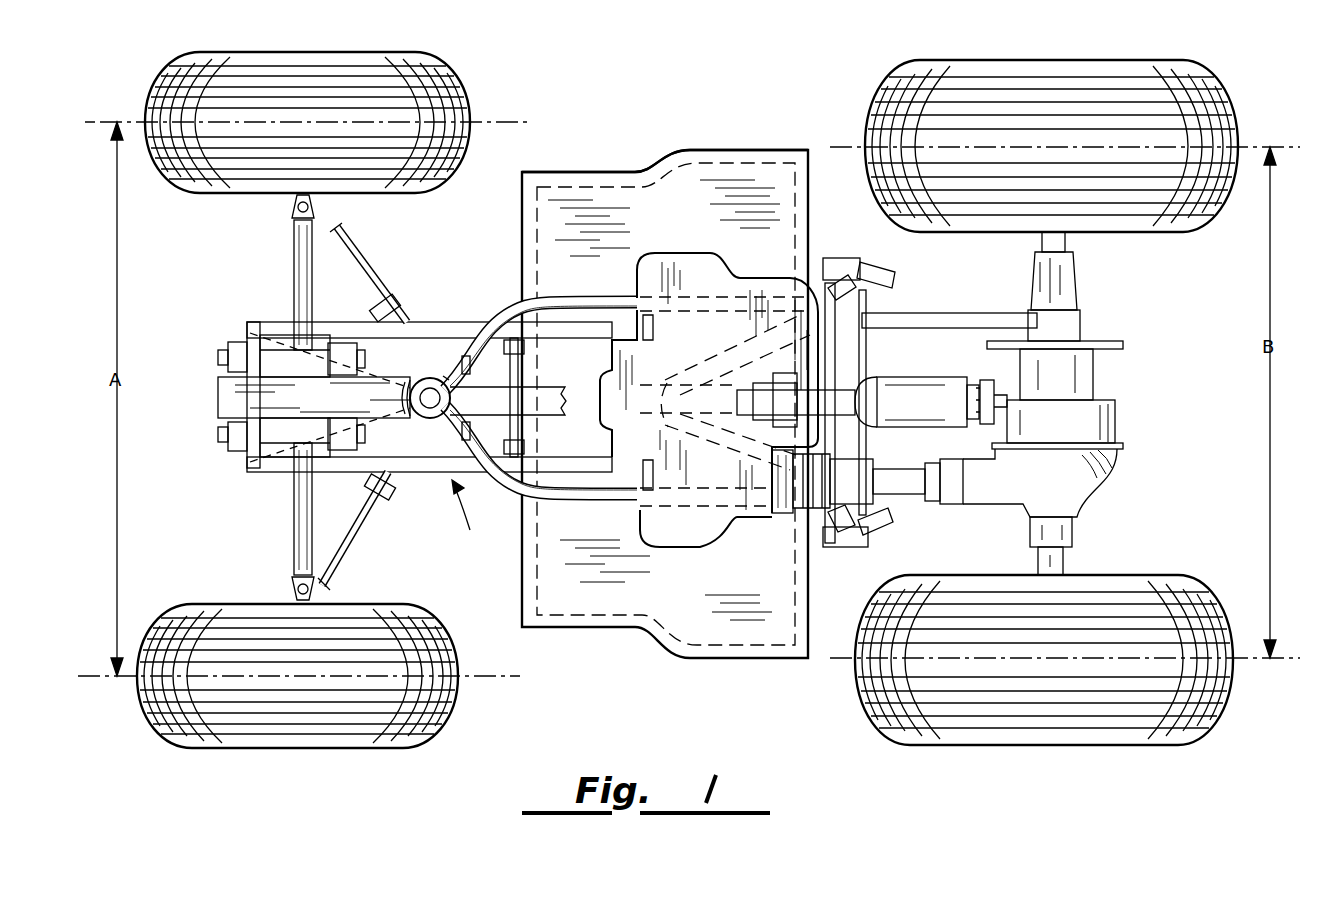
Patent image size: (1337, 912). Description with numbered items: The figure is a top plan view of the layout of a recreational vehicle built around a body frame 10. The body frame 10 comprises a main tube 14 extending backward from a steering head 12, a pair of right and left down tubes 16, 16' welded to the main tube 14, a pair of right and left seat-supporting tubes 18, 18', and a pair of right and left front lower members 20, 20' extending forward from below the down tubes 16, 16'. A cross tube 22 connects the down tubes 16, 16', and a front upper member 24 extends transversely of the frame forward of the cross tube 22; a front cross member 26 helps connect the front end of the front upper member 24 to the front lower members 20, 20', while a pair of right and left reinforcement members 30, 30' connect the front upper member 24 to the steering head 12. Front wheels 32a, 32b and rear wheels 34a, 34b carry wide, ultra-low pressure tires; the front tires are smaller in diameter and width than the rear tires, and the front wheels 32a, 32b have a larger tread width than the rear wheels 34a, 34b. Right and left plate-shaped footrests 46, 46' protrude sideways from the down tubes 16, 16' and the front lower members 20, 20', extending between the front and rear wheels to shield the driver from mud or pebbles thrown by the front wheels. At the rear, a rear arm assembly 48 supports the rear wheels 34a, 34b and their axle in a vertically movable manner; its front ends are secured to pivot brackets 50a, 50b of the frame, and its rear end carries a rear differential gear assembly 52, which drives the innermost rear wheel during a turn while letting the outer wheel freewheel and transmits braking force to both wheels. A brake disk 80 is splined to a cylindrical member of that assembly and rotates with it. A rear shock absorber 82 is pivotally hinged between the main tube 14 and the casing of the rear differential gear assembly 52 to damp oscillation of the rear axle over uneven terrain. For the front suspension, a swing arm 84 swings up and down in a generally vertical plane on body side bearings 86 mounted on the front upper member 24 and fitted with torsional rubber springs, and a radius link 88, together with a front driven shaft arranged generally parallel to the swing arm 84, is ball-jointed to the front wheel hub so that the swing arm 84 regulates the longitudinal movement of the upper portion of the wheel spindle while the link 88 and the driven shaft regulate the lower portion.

The body frame 10 is at (471, 519).
The steering head 12 is at (420, 384).
The main tube 14 is at (534, 386).
The right down tube 16 is at (429, 436).
The left down tube 16' is at (443, 333).
The right seat-supporting tube 18 is at (709, 424).
The left seat-supporting tube 18' is at (735, 392).
The right front lower member 20 is at (518, 469).
The left front lower member 20' is at (541, 322).
The cross tube 22 is at (518, 440).
The front upper member 24 is at (216, 396).
The front cross member 26 is at (246, 332).
The right reinforcement member 30 is at (264, 471).
The left reinforcement member 30' is at (269, 318).
The front wheel 32a is at (152, 732).
The front wheel 32b is at (177, 70).
The rear wheel 34a is at (1224, 724).
The rear wheel 34b is at (1218, 86).
The right footrest 46 is at (665, 433).
The left footrest 46' is at (665, 134).
The rear arm assembly 48 is at (1118, 466).
The pivot bracket 50a is at (843, 548).
The pivot bracket 50b is at (846, 260).
The rear differential gear assembly 52 is at (1120, 421).
The brake disk 80 is at (1108, 341).
The rear shock absorber 82 is at (904, 378).
The swing arm 84 is at (292, 548).
The body side bearing 86 is at (232, 446).
The radius link 88 is at (345, 538).